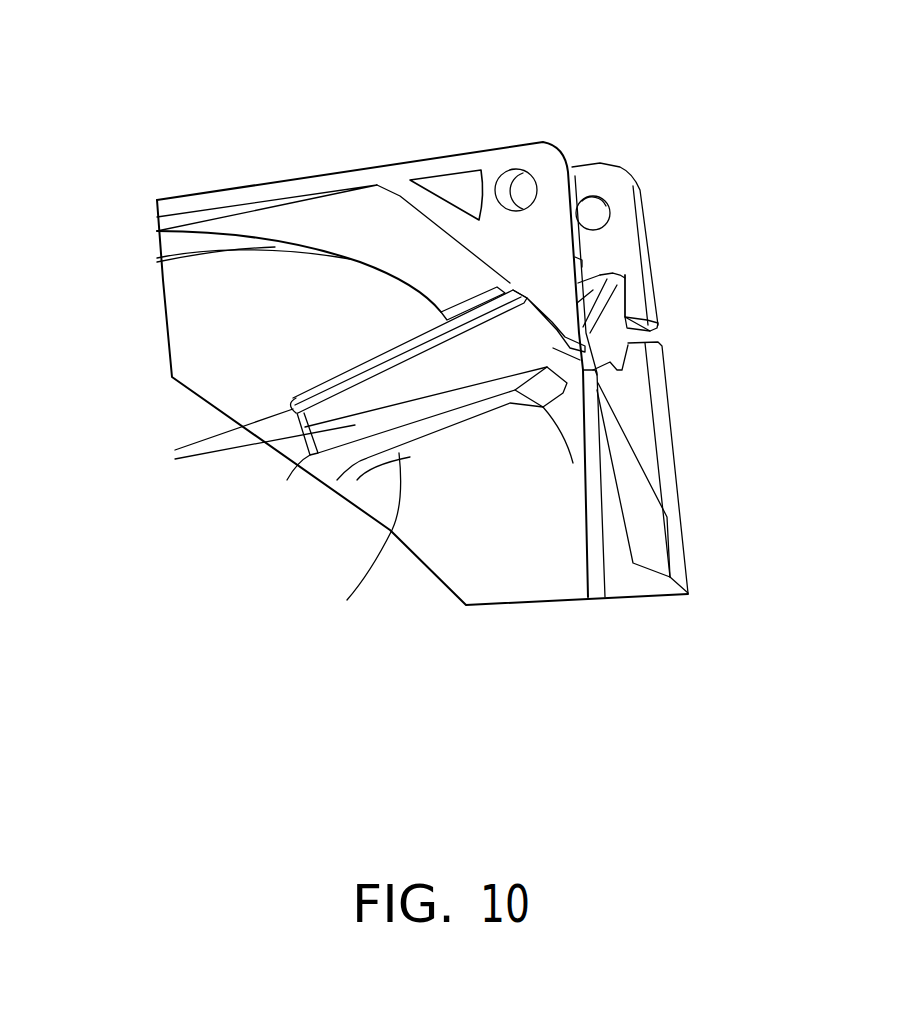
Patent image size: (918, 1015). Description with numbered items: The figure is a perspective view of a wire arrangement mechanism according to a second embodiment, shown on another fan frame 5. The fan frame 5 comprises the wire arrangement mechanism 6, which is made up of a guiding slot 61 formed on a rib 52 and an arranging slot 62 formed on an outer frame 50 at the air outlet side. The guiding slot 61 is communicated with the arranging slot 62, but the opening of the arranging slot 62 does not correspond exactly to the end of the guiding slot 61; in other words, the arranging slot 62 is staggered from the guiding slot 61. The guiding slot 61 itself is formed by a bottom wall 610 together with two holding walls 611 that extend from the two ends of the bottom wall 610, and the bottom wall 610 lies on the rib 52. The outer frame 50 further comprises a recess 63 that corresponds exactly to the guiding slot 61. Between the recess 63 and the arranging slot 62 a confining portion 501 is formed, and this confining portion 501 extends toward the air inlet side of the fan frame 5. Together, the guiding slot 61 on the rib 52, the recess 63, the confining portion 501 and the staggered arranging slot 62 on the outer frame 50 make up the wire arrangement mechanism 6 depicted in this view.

The fan frame 5 is at (375, 146).
The outer frame 50 is at (577, 231).
The confining portion 501 is at (652, 320).
The rib 52 is at (349, 538).
The wire arrangement mechanism 6 is at (781, 347).
The guiding slot 61 is at (435, 367).
The bottom wall 610 is at (303, 455).
The holding walls 611 is at (232, 443).
The arranging slot 62 is at (583, 362).
The recess 63 is at (580, 300).